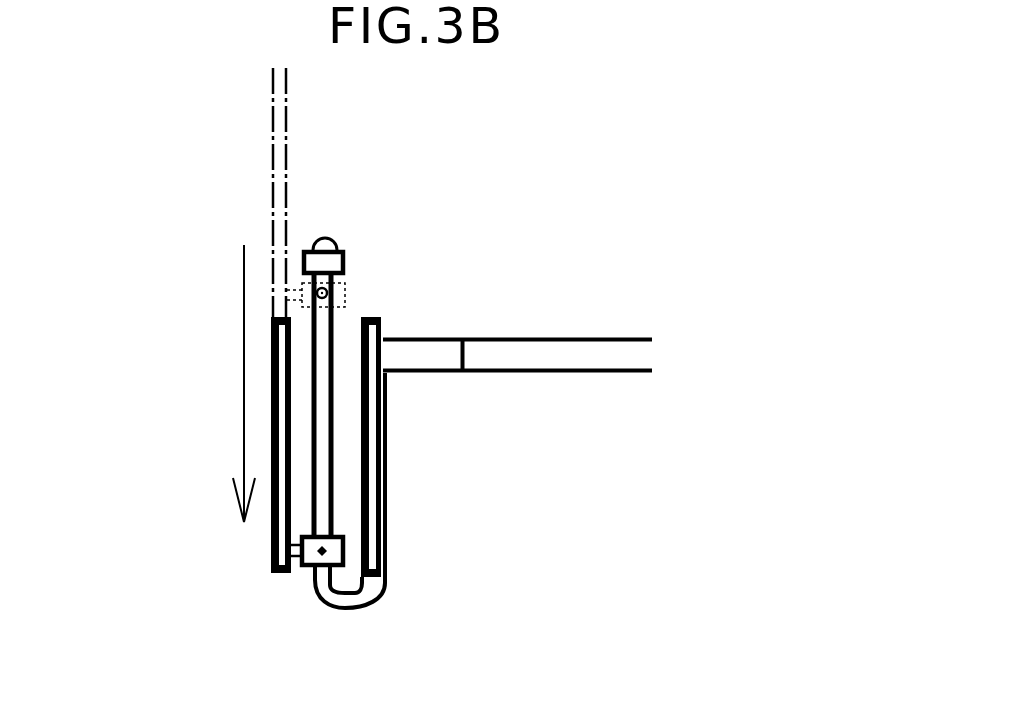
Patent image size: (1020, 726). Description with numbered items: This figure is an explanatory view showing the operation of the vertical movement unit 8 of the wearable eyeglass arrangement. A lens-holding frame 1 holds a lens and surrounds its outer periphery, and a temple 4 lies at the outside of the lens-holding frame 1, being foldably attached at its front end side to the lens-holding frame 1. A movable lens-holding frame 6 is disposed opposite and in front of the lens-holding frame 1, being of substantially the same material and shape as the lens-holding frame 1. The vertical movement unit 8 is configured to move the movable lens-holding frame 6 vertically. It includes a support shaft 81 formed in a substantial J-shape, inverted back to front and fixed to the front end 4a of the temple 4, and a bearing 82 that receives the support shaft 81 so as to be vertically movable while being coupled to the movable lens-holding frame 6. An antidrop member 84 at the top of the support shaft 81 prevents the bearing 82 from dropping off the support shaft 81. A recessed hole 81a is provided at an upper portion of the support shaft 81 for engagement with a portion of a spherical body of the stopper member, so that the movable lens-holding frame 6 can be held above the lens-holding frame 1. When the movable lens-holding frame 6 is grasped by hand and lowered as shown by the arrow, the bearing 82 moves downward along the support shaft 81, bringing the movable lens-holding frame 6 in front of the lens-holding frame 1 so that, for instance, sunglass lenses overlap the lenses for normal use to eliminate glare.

The lens-holding frame 1 is at (467, 447).
The temple 4 is at (518, 299).
The front end of the temple 4a is at (517, 298).
The movable lens-holding frame 6 is at (178, 470).
The vertical movement unit 8 is at (325, 430).
The support shaft 81 is at (264, 594).
The recessed hole 81a is at (420, 269).
The bearing 82 is at (429, 525).
The antidrop member 84 is at (413, 227).